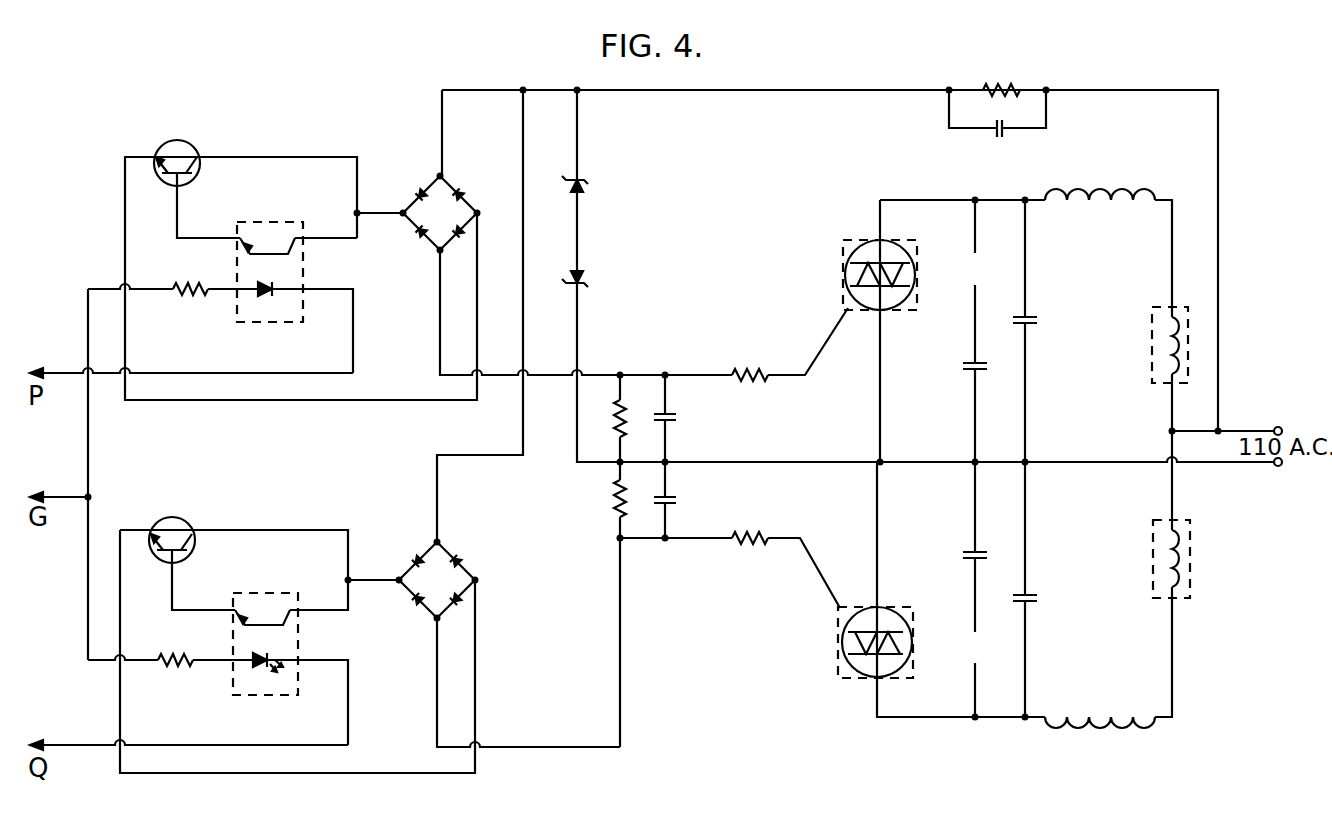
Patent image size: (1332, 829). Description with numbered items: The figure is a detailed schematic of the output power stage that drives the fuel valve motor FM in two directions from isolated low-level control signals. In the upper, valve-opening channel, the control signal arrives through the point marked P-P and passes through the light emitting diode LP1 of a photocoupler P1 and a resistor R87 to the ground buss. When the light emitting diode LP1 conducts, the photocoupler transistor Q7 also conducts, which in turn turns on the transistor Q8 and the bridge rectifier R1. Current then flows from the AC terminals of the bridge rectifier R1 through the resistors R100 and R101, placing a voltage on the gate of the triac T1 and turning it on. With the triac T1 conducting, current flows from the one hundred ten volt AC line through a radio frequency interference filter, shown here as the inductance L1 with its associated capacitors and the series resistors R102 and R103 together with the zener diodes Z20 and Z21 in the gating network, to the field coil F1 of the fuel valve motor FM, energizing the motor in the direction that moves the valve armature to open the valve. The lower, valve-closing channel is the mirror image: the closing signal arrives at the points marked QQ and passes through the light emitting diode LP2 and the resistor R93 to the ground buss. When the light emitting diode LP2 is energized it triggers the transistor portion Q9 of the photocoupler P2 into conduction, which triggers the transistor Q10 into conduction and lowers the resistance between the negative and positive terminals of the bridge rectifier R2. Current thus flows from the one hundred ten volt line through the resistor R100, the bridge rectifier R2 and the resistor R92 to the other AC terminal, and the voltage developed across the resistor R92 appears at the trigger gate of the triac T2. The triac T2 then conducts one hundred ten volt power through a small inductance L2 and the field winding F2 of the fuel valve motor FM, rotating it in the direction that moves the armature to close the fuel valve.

The transistor Q8 is at (170, 150).
The photocoupler Q7 is at (262, 240).
The light emitting diode LP1 is at (277, 276).
The photocoupler P1 is at (290, 316).
The resistor R87 is at (190, 303).
The bridge rectifier R1 is at (418, 200).
The zener diode Z20 is at (586, 178).
The zener diode Z21 is at (586, 282).
The resistor R100 is at (1005, 90).
The resistor R101 is at (617, 430).
The resistor R92 is at (610, 510).
The resistor R102 is at (744, 357).
The resistor R103 is at (744, 521).
The triac T1 is at (848, 245).
The triac T2 is at (838, 672).
The inductance L1 is at (1068, 202).
The small inductance L2 is at (1078, 730).
The fuel valve motor FM is at (1182, 310).
The field coil F1 is at (1168, 358).
The field winding F2 is at (1168, 540).
The transistor Q10 is at (165, 528).
The transistor portion of photo-coupler Q9 is at (255, 608).
The light emitting diode LP2 is at (269, 651).
The photo-coupler P2 is at (262, 692).
The resistor R93 is at (177, 677).
The bridge rectifier R2 is at (440, 558).